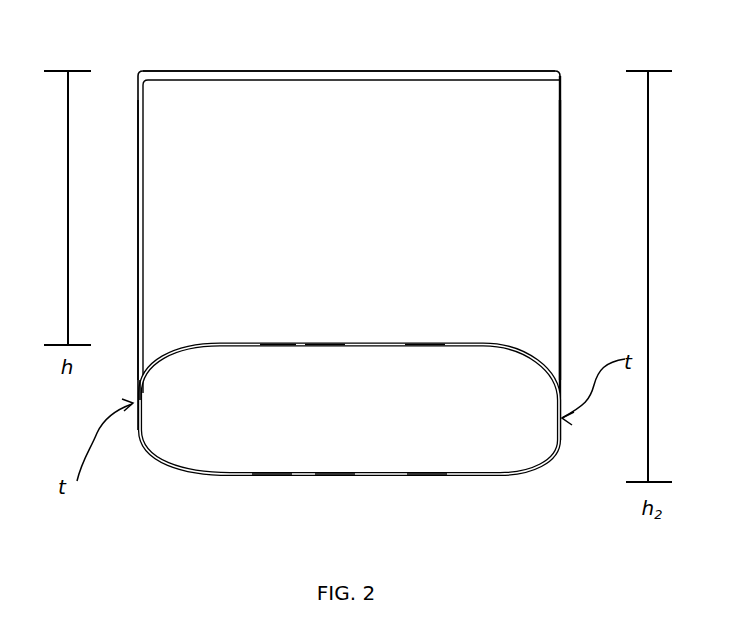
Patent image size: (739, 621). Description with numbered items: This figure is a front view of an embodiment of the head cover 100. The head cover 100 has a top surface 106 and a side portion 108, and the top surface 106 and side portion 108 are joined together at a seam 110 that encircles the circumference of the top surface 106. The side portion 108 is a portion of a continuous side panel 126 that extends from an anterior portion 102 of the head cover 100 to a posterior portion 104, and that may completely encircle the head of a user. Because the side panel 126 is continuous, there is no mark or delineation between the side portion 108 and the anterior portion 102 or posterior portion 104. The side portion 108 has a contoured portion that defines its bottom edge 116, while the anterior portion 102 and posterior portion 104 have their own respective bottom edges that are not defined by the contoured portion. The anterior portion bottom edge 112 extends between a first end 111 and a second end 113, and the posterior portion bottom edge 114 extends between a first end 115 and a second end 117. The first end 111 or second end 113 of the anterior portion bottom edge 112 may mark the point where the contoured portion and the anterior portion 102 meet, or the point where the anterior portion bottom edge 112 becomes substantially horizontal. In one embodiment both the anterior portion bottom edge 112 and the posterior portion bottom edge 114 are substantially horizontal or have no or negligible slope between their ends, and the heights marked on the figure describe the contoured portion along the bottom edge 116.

The head cover 100 is at (143, 482).
The anterior portion 102 is at (347, 250).
The posterior portion 104 is at (345, 358).
The top surface 106 is at (222, 71).
The side portion 108 is at (139, 242).
The seam 110 is at (272, 79).
The first end of anterior portion bottom edge 111 is at (278, 343).
The anterior portion bottom edge 112 is at (325, 343).
The second end of anterior portion bottom edge 113 is at (425, 343).
The posterior portion bottom edge 114 is at (335, 475).
The first end of posterior portion bottom edge 115 is at (272, 475).
The bottom edge of side portion 116 is at (142, 390).
The second end of posterior portion bottom edge 117 is at (427, 475).
The continuous side panel 126 is at (257, 165).